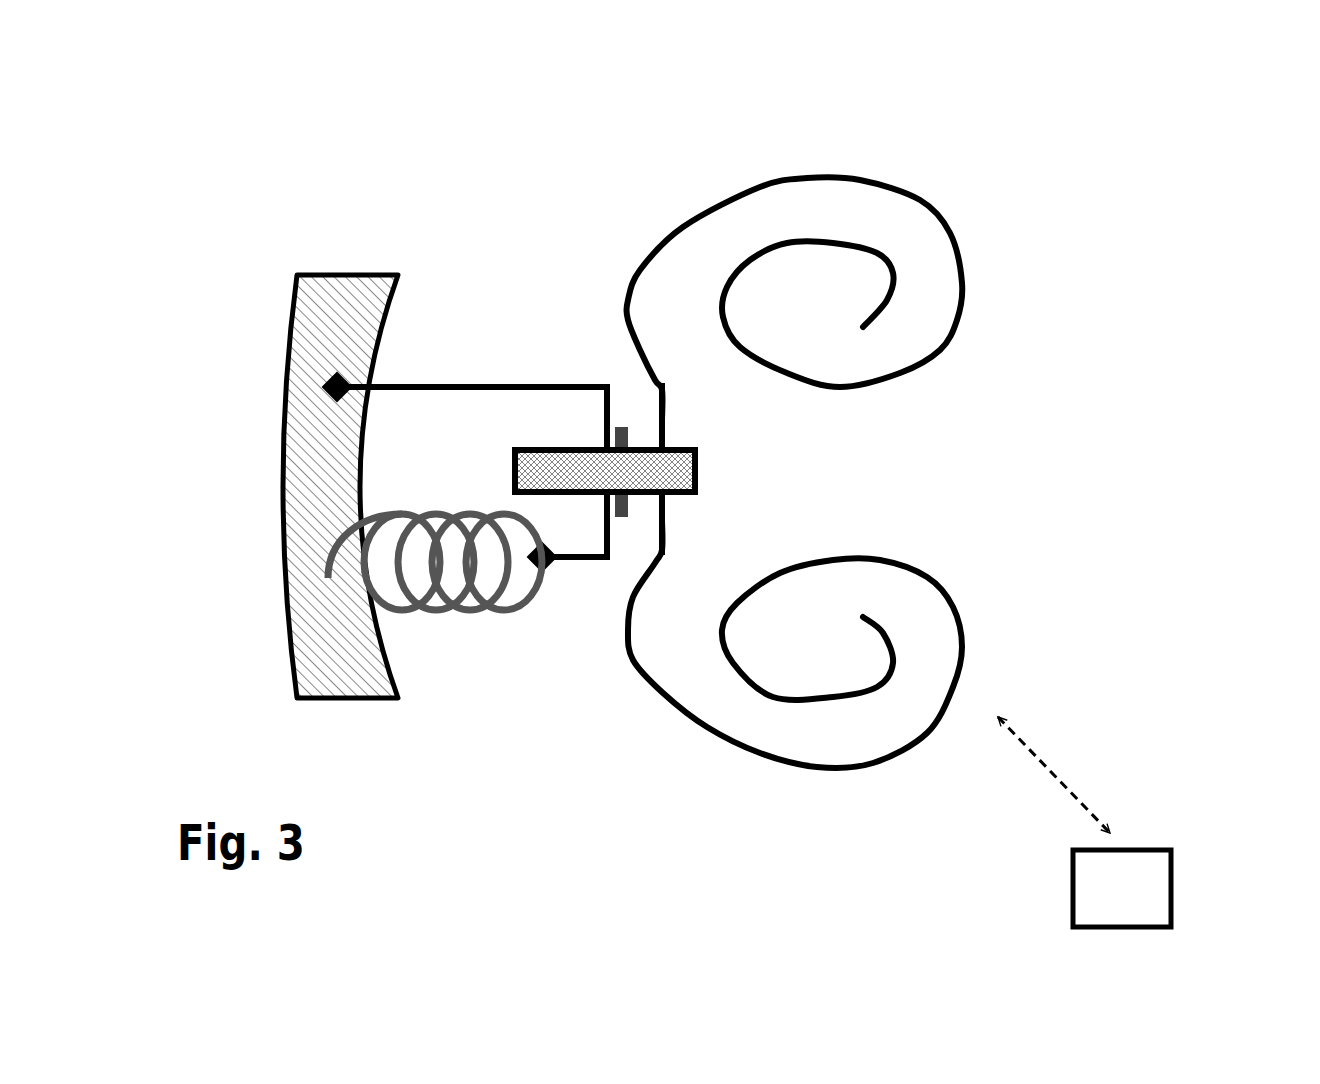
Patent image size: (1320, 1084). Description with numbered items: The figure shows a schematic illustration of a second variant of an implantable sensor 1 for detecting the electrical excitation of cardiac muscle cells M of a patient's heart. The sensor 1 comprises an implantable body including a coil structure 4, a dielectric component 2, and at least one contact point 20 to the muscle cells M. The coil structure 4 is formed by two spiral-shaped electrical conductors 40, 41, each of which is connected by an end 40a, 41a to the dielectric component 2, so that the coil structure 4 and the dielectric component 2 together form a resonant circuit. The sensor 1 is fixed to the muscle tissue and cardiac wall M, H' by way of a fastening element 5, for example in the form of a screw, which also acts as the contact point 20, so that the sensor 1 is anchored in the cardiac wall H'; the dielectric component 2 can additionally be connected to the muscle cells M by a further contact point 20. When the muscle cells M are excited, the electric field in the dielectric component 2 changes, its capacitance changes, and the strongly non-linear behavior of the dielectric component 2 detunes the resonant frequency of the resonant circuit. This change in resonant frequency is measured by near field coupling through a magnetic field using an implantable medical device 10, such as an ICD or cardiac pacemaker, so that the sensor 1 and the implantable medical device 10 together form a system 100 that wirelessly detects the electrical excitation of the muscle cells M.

The implantable sensor 1 is at (593, 468).
The dielectric component 2 is at (584, 374).
The coil structure 4 is at (863, 417).
The spiral-shaped electrical conductor 40 is at (966, 250).
The spiral-shaped electrical conductor 41 is at (936, 570).
The end of spiral-shaped electrical conductor 40a is at (668, 420).
The end of spiral-shaped electrical conductor 41a is at (668, 520).
The fastening element 5 is at (315, 555).
The contact point 20 is at (273, 555).
The magnet / housing part M, H' is at (318, 395).
The muscle cells M is at (302, 469).
The cardiac wall H' is at (302, 469).
The system 100 is at (1165, 812).
The implantable medical device 10 is at (1140, 908).